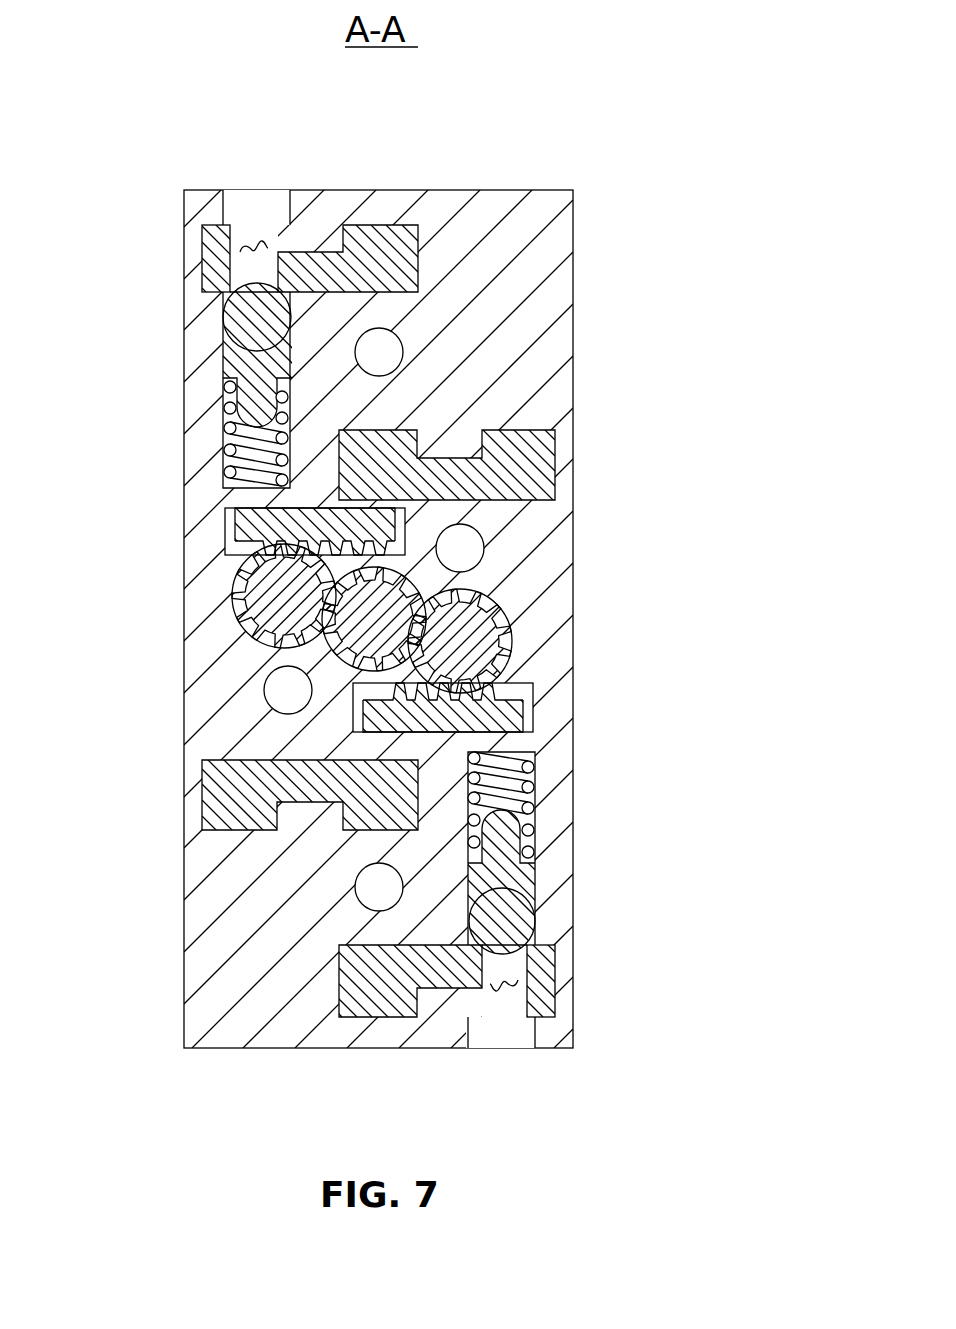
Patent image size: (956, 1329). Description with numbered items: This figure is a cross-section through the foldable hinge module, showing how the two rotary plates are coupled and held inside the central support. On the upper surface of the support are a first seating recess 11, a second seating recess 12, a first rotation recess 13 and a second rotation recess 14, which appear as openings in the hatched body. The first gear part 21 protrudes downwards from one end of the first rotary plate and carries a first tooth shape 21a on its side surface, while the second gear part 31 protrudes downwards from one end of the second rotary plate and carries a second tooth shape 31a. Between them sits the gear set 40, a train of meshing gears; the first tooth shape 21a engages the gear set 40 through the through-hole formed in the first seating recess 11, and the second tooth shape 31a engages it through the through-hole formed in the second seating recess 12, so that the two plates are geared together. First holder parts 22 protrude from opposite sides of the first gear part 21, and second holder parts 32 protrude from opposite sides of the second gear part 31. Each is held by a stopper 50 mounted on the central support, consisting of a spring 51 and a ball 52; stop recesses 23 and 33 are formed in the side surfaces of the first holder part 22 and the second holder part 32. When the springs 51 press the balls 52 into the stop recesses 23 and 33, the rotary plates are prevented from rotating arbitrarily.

The first seating recess 11 is at (505, 480).
The second seating recess 12 is at (275, 710).
The first rotation recess 13 is at (381, 329).
The second rotation recess 14 is at (245, 455).
The first gear part 21 is at (226, 525).
The first tooth shape 21a is at (393, 533).
The first holder part 22 is at (383, 272).
The stop recess 23 is at (253, 240).
The second gear part 31 is at (498, 705).
The second tooth shape 31a is at (478, 693).
The second holder part 32 is at (545, 458).
The stop recess 33 is at (510, 990).
The gear set 40 is at (472, 612).
The stopper 50 is at (102, 315).
The spring 51 is at (240, 428).
The ball 52 is at (245, 312).